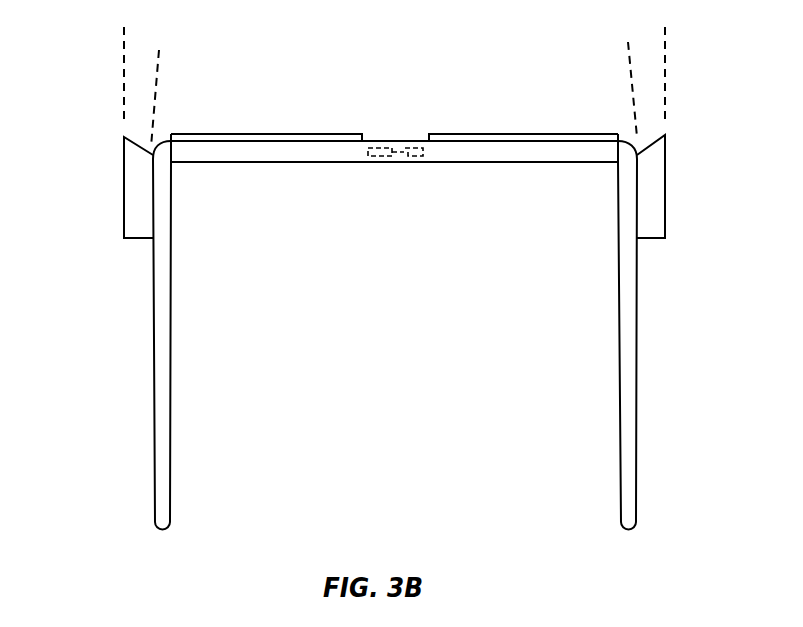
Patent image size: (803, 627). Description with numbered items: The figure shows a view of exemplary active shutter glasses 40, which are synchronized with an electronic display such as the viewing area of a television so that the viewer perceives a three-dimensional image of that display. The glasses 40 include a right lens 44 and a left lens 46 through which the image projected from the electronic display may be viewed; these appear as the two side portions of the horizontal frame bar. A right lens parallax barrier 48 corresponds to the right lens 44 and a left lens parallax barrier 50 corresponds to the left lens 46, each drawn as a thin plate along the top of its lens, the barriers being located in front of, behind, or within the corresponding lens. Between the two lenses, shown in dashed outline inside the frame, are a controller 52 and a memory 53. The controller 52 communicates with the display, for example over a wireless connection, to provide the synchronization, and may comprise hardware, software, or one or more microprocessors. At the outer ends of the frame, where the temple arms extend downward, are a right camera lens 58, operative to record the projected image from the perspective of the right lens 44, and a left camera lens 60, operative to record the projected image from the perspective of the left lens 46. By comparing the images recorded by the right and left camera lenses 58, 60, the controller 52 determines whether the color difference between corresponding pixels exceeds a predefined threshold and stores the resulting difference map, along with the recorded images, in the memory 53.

The active shutter glasses 40 is at (72, 164).
The right lens 44 is at (518, 153).
The left lens 46 is at (252, 153).
The right lens parallax barrier 48 is at (547, 133).
The left lens parallax barrier 50 is at (270, 133).
The controller 52 is at (382, 157).
The memory 53 is at (413, 157).
The right camera lens 58 is at (650, 220).
The left camera lens 60 is at (137, 221).